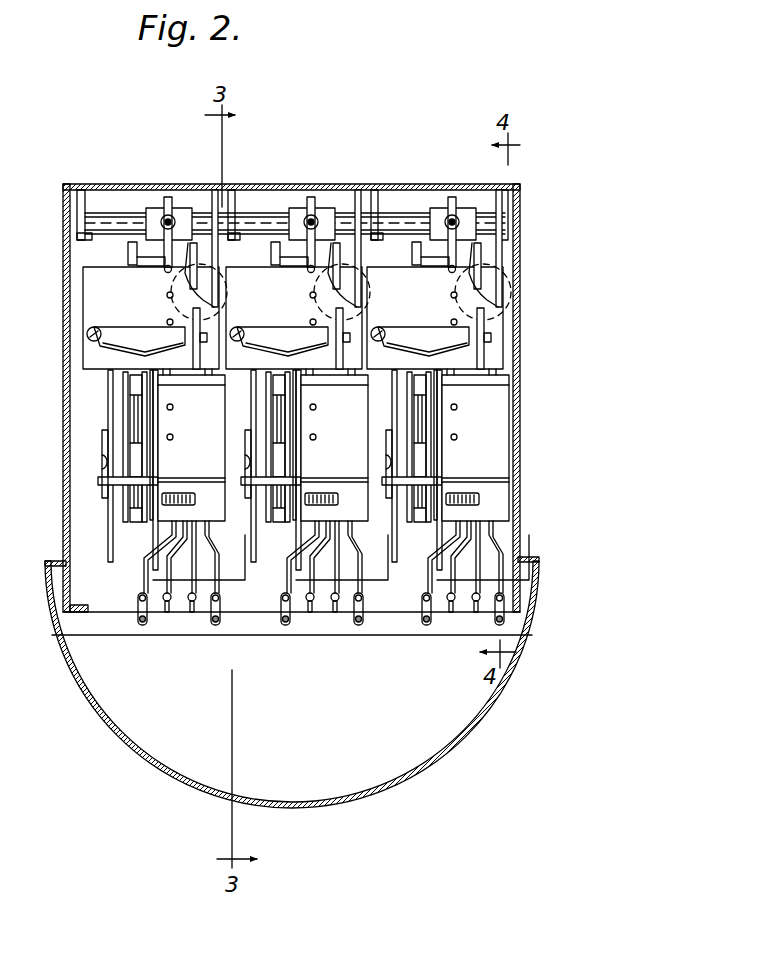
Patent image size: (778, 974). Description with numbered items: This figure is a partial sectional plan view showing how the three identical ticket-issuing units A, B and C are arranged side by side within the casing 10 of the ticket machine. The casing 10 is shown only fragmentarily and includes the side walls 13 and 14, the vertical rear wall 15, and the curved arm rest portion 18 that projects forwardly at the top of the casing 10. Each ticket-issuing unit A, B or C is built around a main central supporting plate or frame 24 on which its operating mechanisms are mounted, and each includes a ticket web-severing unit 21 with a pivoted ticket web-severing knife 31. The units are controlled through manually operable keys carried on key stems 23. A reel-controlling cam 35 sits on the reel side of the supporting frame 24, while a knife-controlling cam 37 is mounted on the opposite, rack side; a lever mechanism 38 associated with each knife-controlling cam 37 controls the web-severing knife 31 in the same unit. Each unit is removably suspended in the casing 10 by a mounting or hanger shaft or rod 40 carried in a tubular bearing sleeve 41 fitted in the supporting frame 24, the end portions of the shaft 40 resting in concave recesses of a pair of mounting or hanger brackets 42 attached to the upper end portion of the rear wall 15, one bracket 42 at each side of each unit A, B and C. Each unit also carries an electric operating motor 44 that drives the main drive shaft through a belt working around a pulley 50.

The casing 10 is at (523, 378).
The side wall 13 is at (521, 411).
The side wall 14 is at (63, 440).
The rear wall 15 is at (388, 184).
The curved arm rest portion 18 is at (382, 793).
The ticket web-severing unit 21 is at (146, 326).
The key stems 23 is at (168, 605).
The supporting plate or frame 24 is at (167, 196).
The pivoted ticket web-severing knife 31 is at (98, 328).
The reel-controlling cam 35 is at (128, 250).
The knife-controlling cam 37 is at (165, 272).
The lever mechanism 38 is at (194, 355).
The mounting or hanger shaft or rod 40 is at (98, 218).
The tubular bearing sleeve 41 is at (182, 208).
The mounting or hanger bracket 42 is at (85, 198).
The electric operating motor 44 is at (224, 292).
The pulley 50 is at (218, 262).
The ticket-issuing unit A is at (172, 200).
The ticket-issuing unit B is at (312, 196).
The ticket-issuing unit C is at (452, 196).